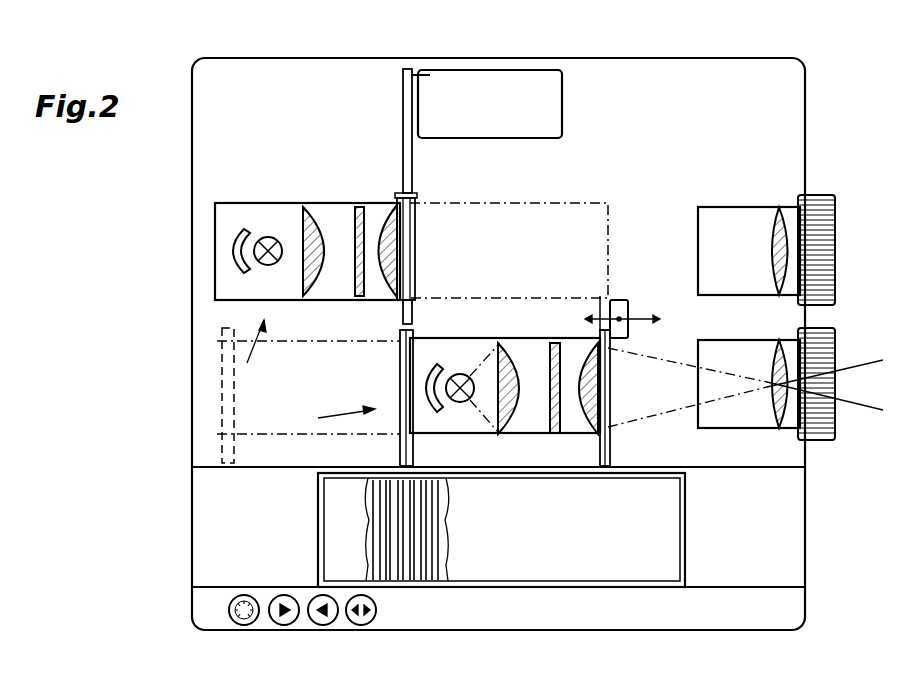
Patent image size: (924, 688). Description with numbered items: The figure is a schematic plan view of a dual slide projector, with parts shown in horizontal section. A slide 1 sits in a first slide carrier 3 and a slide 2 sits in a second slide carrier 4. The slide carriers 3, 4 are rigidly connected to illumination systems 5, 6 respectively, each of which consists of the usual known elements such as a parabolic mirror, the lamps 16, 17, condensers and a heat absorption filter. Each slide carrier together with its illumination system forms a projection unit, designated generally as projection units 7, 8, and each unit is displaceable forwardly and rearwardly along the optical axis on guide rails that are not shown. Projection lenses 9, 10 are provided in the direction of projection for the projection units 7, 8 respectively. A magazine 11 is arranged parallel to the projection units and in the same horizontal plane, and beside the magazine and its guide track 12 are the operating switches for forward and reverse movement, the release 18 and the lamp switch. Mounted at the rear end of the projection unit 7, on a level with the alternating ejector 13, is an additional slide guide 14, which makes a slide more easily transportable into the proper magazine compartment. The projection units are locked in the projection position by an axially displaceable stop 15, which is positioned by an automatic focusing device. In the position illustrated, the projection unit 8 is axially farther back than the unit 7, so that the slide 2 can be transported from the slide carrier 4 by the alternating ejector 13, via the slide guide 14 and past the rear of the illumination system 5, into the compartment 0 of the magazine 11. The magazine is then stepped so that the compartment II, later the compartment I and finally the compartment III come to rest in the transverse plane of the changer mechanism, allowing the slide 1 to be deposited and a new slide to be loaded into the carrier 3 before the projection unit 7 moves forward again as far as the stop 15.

The slide 1 is at (612, 431).
The slide 2 is at (398, 312).
The first slide carrier 3 is at (600, 446).
The second slide carrier 4 is at (395, 212).
The illumination system 5 is at (480, 436).
The illumination system 6 is at (308, 205).
The projection unit 7 is at (336, 417).
The projection unit 8 is at (308, 391).
The projection lens 9 is at (805, 440).
The projection lens 10 is at (778, 210).
The magazine 11 is at (625, 568).
The guide track 12 is at (795, 541).
The alternating ejector 13 is at (404, 90).
The slide guide 14 is at (400, 432).
The stop 15 is at (620, 300).
The lamp 16 is at (266, 238).
The lamp 17 is at (460, 375).
The release 18 is at (355, 622).
The compartment III is at (374, 580).
The compartment II is at (386, 580).
The compartment I is at (398, 580).
The compartment O 0 is at (410, 580).